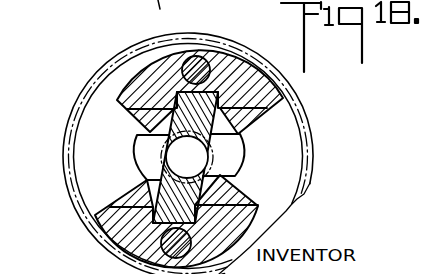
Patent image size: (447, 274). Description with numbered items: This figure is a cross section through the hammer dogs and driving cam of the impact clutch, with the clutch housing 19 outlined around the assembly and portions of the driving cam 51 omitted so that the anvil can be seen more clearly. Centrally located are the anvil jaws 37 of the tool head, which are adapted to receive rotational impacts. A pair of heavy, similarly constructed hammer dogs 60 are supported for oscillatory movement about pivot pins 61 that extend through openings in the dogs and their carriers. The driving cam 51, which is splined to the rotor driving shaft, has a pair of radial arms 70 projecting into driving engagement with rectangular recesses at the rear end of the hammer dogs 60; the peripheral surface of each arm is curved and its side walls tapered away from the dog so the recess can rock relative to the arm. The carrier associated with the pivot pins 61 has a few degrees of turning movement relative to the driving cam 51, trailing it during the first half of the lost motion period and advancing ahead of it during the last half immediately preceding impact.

The clutch housing 19 is at (307, 114).
The hammer dogs 60 is at (245, 70).
The pivot pins 61 is at (199, 59).
The driving cam 51 is at (205, 123).
The anvil jaws 37 is at (145, 157).
The radial arms 70 is at (218, 203).